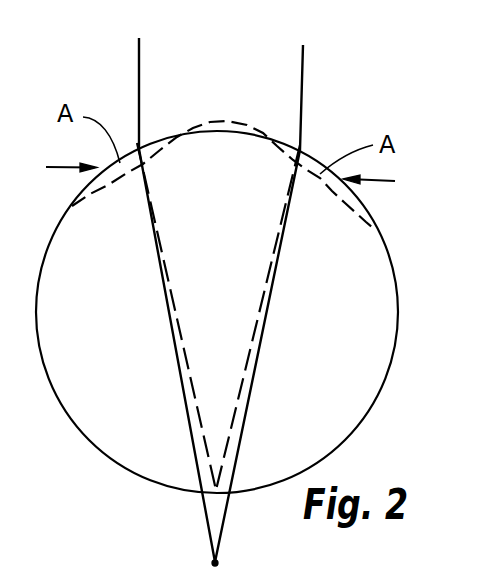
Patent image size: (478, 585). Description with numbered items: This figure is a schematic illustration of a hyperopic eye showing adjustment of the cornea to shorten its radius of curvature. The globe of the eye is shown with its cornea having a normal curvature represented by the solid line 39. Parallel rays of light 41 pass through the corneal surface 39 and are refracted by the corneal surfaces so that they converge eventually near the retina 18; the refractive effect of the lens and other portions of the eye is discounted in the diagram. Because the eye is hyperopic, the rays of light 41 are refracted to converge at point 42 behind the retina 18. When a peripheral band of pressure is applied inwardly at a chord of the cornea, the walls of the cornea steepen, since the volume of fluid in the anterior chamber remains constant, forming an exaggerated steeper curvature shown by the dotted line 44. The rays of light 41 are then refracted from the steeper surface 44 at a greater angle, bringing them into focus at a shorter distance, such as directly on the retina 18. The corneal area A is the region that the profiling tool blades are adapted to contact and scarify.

The retina 18 is at (348, 435).
The corneal surface of normal curvature 39 is at (232, 127).
The parallel rays of light 41 is at (305, 87).
The convergence point 42 is at (218, 562).
The steepened corneal surface 44 is at (261, 131).